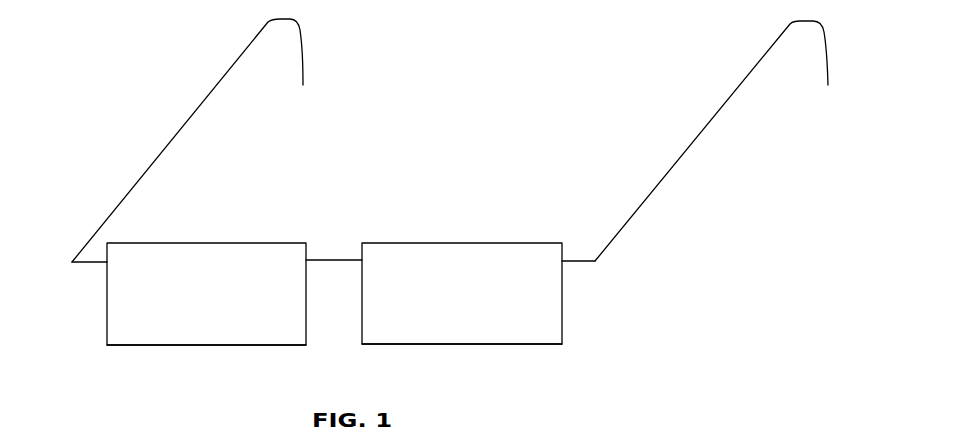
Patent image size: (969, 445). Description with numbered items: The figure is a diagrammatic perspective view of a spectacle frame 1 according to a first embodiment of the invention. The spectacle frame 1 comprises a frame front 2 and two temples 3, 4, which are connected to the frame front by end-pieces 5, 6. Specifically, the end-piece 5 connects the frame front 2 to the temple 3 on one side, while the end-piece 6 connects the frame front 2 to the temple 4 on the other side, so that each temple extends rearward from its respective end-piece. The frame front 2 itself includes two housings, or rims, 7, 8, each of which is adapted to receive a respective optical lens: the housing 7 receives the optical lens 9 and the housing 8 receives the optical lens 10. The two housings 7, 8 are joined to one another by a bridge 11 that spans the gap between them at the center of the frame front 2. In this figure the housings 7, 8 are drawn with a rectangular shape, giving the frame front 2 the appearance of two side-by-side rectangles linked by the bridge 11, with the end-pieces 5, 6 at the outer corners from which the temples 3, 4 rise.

The spectacle frame 1 is at (739, 84).
The frame front 2 is at (503, 233).
The temple 3 is at (161, 154).
The temple 4 is at (659, 182).
The end-piece 5 is at (86, 263).
The end-piece 6 is at (580, 262).
The housing (rim) 7 is at (175, 345).
The housing (rim) 8 is at (417, 345).
The optical lens 9 is at (131, 305).
The optical lens 10 is at (543, 310).
The bridge 11 is at (327, 258).